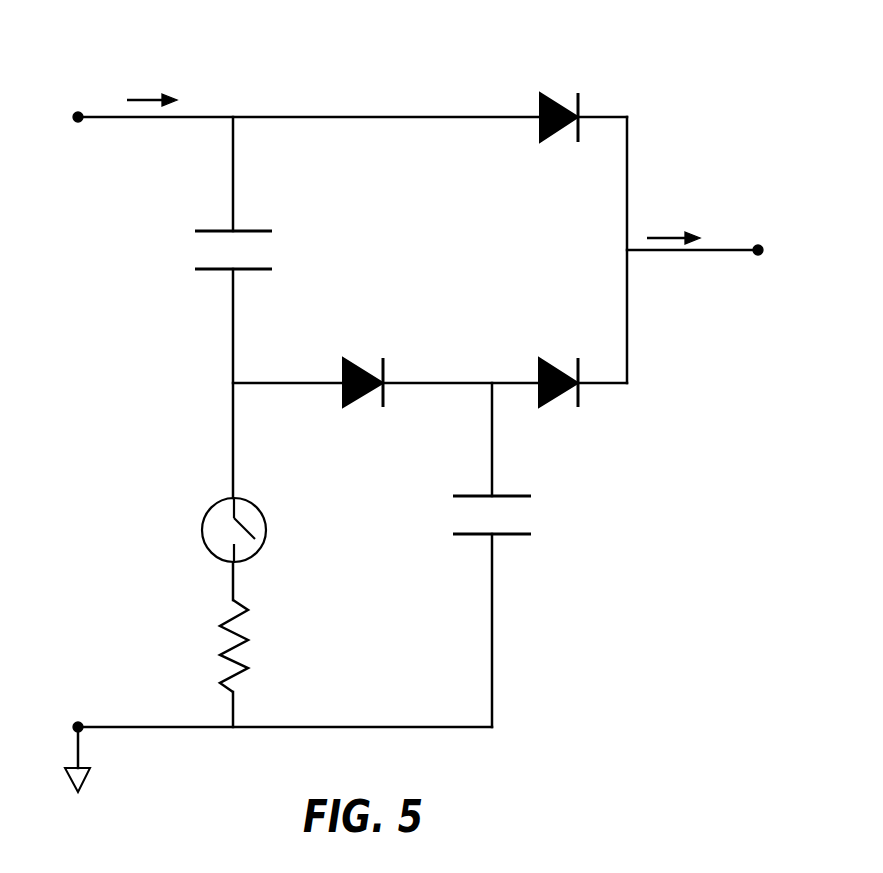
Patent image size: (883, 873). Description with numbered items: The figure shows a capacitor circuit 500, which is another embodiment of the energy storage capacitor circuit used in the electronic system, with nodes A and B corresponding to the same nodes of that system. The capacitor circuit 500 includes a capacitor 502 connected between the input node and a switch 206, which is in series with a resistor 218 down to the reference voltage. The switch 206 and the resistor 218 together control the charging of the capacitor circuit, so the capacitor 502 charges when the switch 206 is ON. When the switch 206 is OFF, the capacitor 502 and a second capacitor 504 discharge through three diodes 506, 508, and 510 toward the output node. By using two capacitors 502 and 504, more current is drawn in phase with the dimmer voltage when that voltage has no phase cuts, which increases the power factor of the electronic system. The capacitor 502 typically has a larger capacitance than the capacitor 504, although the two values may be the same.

The capacitor circuit 500 is at (816, 107).
The capacitor 502 is at (248, 231).
The capacitor 504 is at (507, 496).
The diode 506 is at (550, 92).
The diode 508 is at (353, 357).
The diode 510 is at (552, 357).
The switch 206 is at (248, 558).
The resistor 218 is at (240, 648).